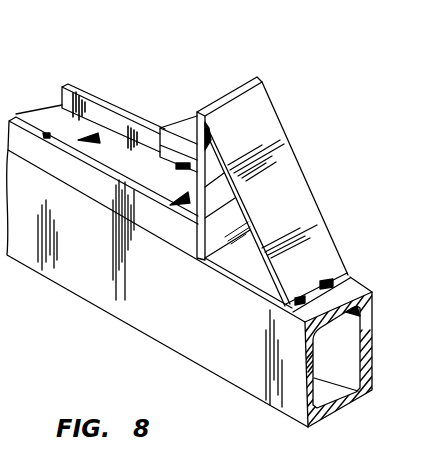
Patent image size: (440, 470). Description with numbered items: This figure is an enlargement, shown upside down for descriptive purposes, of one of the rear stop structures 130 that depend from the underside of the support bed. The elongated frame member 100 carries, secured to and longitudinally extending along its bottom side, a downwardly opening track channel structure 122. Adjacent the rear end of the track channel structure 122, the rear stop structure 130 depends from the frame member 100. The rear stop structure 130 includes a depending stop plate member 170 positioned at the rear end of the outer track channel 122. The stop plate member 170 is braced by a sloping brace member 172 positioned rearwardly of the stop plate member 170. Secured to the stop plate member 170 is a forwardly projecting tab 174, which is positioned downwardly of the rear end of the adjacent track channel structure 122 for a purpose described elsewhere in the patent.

The frame member 100 is at (123, 307).
The track channel structure 122 is at (95, 104).
The rear stop structure 130 is at (260, 172).
The stop plate member 170 is at (253, 97).
The sloping brace member 172 is at (283, 198).
The forwardly projecting tab 174 is at (185, 148).